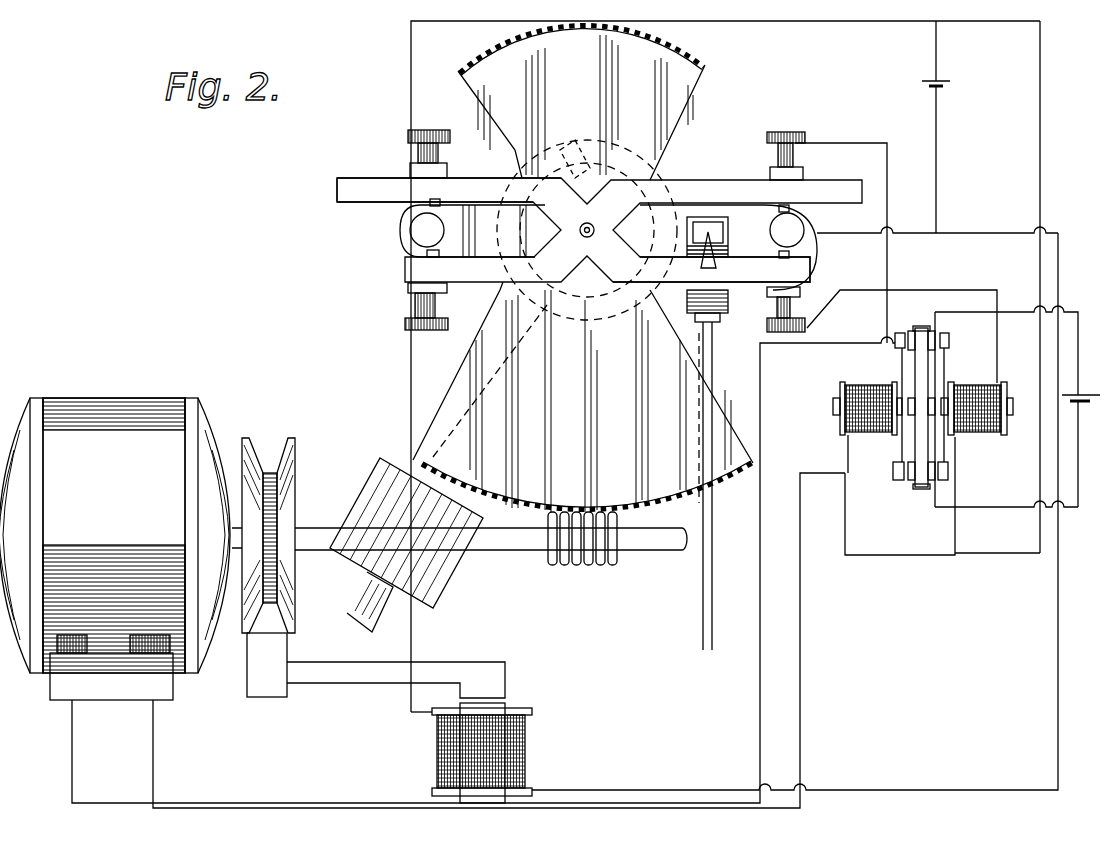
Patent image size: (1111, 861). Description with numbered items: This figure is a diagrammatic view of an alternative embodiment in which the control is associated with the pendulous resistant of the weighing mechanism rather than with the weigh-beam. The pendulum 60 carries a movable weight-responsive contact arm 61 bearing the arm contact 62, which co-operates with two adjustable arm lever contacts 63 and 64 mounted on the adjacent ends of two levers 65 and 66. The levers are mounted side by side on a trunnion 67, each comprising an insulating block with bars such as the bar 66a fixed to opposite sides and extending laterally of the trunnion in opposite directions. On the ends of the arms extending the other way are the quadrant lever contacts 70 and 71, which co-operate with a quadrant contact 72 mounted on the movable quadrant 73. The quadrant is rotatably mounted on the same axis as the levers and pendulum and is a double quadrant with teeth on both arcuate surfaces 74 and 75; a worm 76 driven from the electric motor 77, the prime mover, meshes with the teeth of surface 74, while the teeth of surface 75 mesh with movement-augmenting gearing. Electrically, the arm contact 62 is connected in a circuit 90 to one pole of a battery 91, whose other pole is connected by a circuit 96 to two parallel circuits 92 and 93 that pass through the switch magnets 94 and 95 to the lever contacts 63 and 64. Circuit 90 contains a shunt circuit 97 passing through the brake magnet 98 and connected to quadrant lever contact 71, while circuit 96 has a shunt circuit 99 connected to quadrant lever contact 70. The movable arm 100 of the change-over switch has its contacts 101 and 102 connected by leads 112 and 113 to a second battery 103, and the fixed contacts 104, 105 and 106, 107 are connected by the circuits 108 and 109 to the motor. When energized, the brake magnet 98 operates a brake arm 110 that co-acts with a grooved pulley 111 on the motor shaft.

The pendulum 60 is at (505, 385).
The contact arm 61 is at (640, 314).
The arm contact 62 is at (795, 228).
The arm lever contact 63 is at (793, 134).
The arm lever contact 64 is at (792, 253).
The lever 65 is at (720, 183).
The lever 66 is at (765, 272).
The lever bar 66a is at (363, 178).
The trunnion 67 is at (598, 229).
The quadrant lever contact 70 is at (410, 207).
The quadrant lever contact 71 is at (410, 250).
The quadrant contact 72 is at (427, 230).
The movable quadrant 73 is at (530, 492).
The arcuate surface 74 is at (719, 484).
The arcuate surface 75 is at (703, 64).
The worm 76 is at (588, 566).
The electric motor 77 is at (98, 542).
The circuit 90 is at (908, 232).
The battery 91 is at (940, 84).
The parallel circuit 92 is at (940, 425).
The parallel circuit 93 is at (848, 525).
The switch magnet 94 is at (990, 386).
The switch magnet 95 is at (843, 422).
The circuit 96 is at (1044, 128).
The shunt circuit 97 is at (1063, 252).
The brake magnet 98 is at (482, 748).
The shunt circuit 99 is at (842, 24).
The movable arm 100 is at (922, 362).
The switch contact 101 is at (922, 312).
The switch contact 102 is at (913, 487).
The battery 103 is at (1077, 402).
The fixed contact 104 is at (893, 352).
The fixed contact 105 is at (893, 472).
The fixed contact 106 is at (948, 342).
The fixed contact 107 is at (948, 486).
The circuit 108 is at (273, 800).
The circuit 109 is at (805, 762).
The brake arm 110 is at (322, 678).
The grooved pulley 111 is at (295, 452).
The lead 112 is at (1073, 312).
The lead 113 is at (1020, 508).